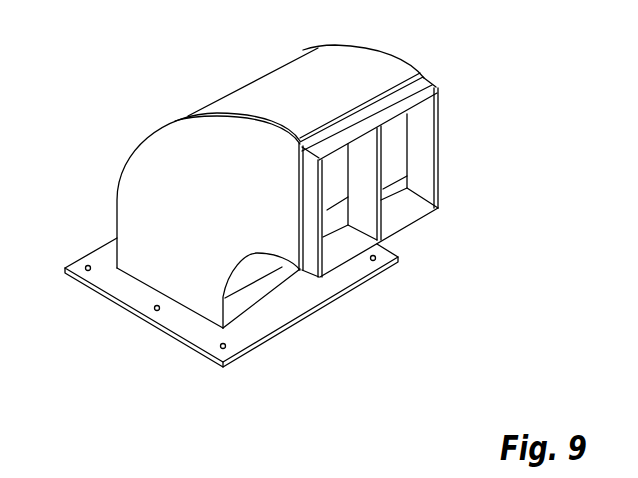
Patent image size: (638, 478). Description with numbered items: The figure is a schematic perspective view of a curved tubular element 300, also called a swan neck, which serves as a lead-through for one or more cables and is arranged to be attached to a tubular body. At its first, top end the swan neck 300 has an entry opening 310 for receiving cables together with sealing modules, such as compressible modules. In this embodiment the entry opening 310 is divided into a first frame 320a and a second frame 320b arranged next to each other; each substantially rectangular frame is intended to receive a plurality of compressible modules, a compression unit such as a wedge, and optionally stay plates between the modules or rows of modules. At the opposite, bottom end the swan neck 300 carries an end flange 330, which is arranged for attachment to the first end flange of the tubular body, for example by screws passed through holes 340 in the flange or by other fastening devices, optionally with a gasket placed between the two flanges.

The curved tubular element 300 is at (135, 118).
The entry opening 310 is at (395, 146).
The first frame 320a is at (347, 243).
The second frame 320b is at (415, 207).
The end flange 330 is at (260, 330).
The holes 340 is at (88, 270).